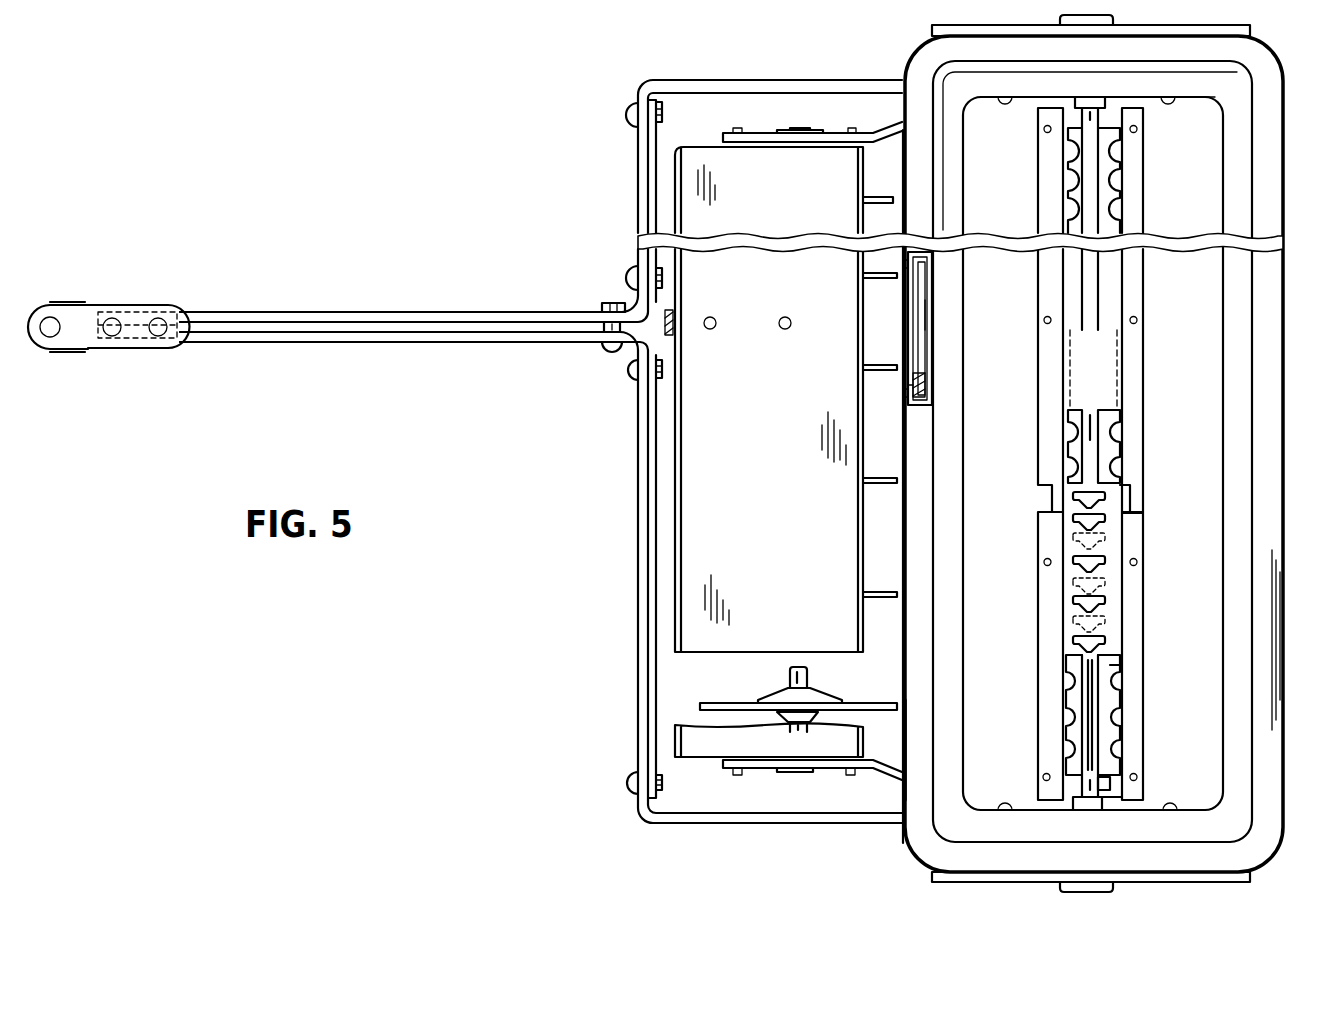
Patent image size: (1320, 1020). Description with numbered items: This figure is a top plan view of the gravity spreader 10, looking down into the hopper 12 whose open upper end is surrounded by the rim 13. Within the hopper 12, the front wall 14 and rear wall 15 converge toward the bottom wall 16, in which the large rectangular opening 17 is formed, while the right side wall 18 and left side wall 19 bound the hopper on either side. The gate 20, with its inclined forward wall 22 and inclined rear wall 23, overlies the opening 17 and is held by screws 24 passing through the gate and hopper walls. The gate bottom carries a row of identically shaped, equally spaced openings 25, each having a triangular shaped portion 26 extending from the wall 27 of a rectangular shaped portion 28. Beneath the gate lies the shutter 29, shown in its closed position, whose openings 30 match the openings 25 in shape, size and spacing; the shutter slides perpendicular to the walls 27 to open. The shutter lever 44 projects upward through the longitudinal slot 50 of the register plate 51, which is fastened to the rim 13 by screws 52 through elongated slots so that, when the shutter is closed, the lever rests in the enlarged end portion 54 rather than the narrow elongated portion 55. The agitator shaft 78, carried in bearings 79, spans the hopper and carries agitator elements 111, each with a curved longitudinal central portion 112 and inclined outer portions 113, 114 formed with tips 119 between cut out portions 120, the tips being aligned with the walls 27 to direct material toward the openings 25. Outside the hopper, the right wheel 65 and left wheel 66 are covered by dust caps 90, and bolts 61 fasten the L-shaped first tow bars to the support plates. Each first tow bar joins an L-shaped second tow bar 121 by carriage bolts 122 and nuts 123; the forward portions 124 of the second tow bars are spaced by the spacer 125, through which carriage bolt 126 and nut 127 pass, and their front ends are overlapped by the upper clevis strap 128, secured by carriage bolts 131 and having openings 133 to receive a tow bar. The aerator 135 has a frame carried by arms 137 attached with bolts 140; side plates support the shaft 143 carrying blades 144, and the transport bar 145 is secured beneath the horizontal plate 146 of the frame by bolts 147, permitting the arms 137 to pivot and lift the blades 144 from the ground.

The gravity spreader 10 is at (900, 844).
The hopper 12 is at (1283, 528).
The rim 13 is at (902, 653).
The front wall 14 is at (948, 580).
The rear wall 15 is at (1228, 520).
The bottom wall 16 is at (1108, 805).
The opening 17 is at (1052, 492).
The right side wall 18 is at (1185, 82).
The left side wall 19 is at (1198, 832).
The gate 20 is at (1085, 452).
The inclined forward wall 22 is at (1045, 402).
The inclined rear wall 23 is at (1140, 341).
The screws 24 is at (1135, 320).
The openings 25 is at (1105, 603).
The triangular shaped portion 26 is at (1100, 617).
The wall 27 is at (1075, 613).
The rectangular shaped portion 28 is at (1075, 600).
The shutter 29 is at (1120, 500).
The openings 30 is at (1058, 500).
The shutter lever 44 is at (910, 385).
The longitudinal slot 50 is at (930, 290).
The register plate 51 is at (915, 320).
The screws 52 is at (905, 262).
The enlarged end portion 54 is at (920, 385).
The narrow elongated portion 55 is at (925, 332).
The bolts 61 is at (1005, 103).
The right wheel 65 is at (948, 23).
The left wheel 66 is at (975, 881).
The agitator shaft 78 is at (1085, 785).
The bearings 79 is at (1078, 97).
The dust cap 90 is at (1118, 9).
The agitator elements 111 is at (1110, 785).
The longitudinal central portion 112 is at (1095, 690).
The inclined longitudinal outer portion 113 is at (1065, 695).
The inclined longitudinal outer portion 114 is at (1107, 660).
The tips 119 is at (1115, 700).
The cut out portions 120 is at (1110, 740).
The second tow bar 121 is at (654, 160).
The carriage bolts 122 is at (628, 110).
The nuts 123 is at (658, 105).
The forward portions 124 is at (365, 312).
The spacer 125 is at (605, 332).
The carriage bolt 126 is at (617, 345).
The nut 127 is at (612, 303).
The upper clevis strap 128 is at (63, 352).
The carriage bolts 131 is at (112, 318).
The openings 133 is at (53, 318).
The aerator 135 is at (680, 664).
The arms 137 is at (890, 130).
The bolts 140 is at (737, 128).
The shaft 143 is at (795, 673).
The blades 144 is at (735, 701).
The transport bar 145 is at (677, 326).
The plate 146 is at (778, 431).
The bolts 147 is at (712, 318).